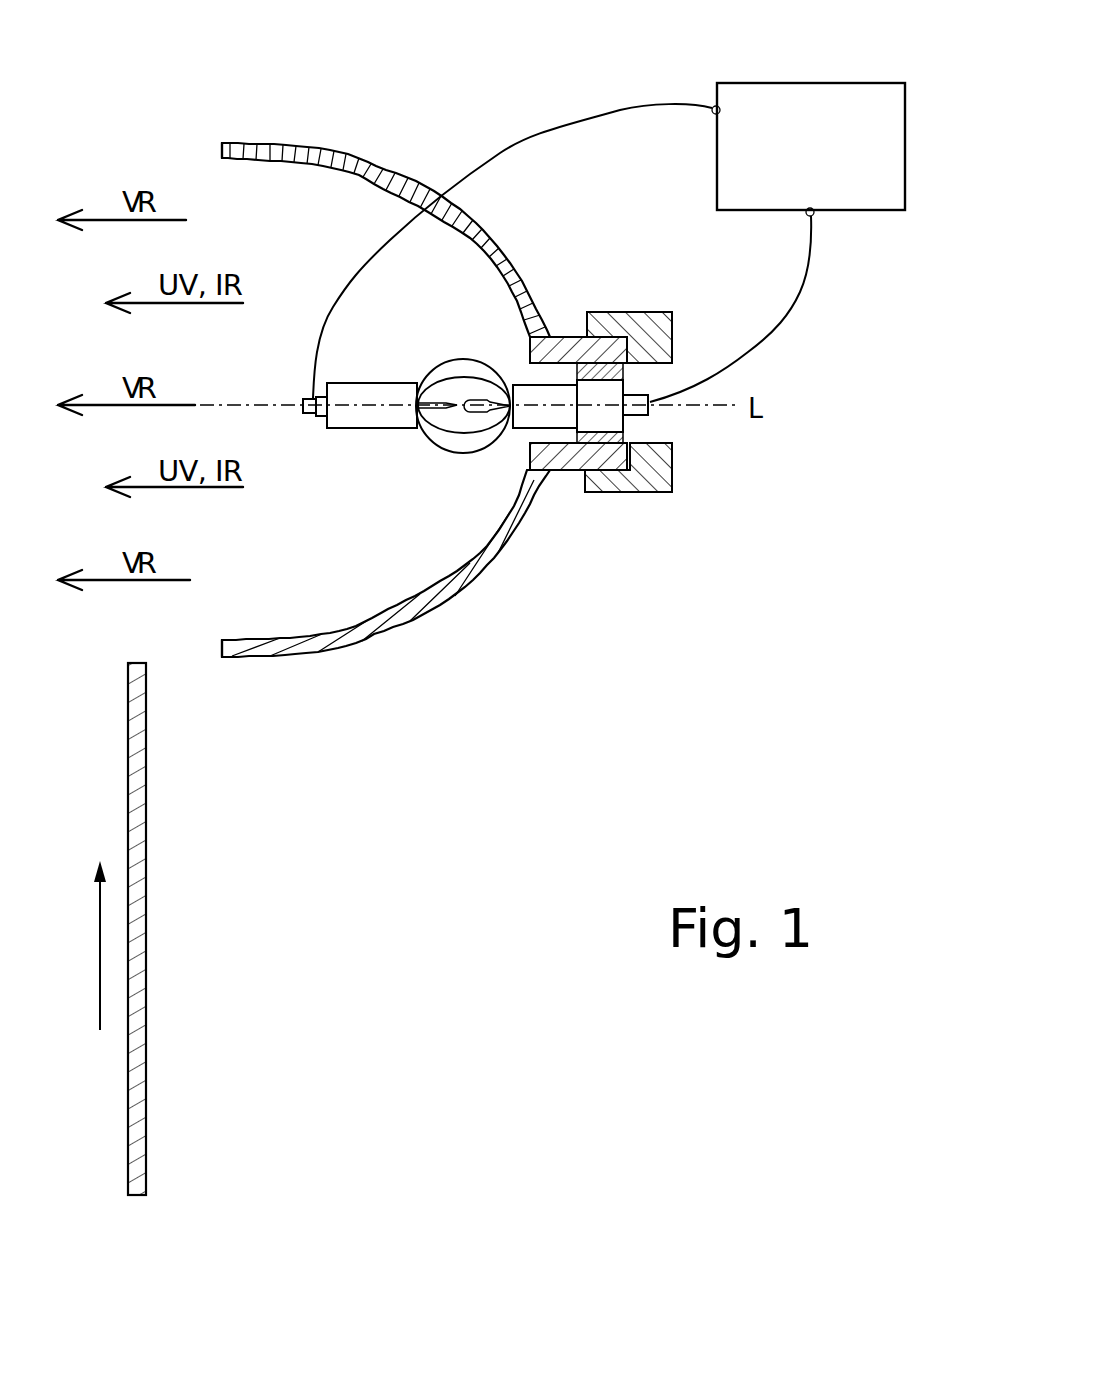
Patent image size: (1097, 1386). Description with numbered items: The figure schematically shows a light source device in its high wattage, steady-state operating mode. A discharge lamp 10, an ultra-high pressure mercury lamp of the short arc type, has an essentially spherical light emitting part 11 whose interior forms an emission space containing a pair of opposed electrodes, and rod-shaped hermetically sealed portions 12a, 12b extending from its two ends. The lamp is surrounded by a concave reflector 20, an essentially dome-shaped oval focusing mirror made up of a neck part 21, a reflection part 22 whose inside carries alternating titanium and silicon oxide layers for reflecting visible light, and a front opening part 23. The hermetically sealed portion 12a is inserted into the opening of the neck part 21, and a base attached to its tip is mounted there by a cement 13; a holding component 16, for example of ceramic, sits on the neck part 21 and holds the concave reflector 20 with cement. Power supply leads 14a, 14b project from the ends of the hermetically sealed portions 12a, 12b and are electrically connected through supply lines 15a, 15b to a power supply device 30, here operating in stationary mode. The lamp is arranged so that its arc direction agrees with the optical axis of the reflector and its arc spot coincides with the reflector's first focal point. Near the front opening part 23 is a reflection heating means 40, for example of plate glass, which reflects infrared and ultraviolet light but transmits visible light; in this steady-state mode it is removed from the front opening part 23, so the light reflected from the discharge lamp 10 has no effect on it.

The discharge lamp 10 is at (527, 373).
The light emitting part 11 is at (457, 454).
The hermetically sealed portion 12a is at (546, 384).
The hermetically sealed portion 12b is at (373, 429).
The cement 13 is at (633, 437).
The power supply lead 14a is at (650, 398).
The power supply lead 14b is at (308, 414).
The supply line 15a is at (777, 308).
The supply line 15b is at (493, 157).
The holding component 16 is at (645, 311).
The concave reflector 20 is at (419, 439).
The neck part 21 is at (572, 472).
The reflection part 22 is at (379, 632).
The front opening part 23 is at (227, 658).
The power supply device 30 is at (771, 83).
The reflection heating means 40 is at (150, 873).